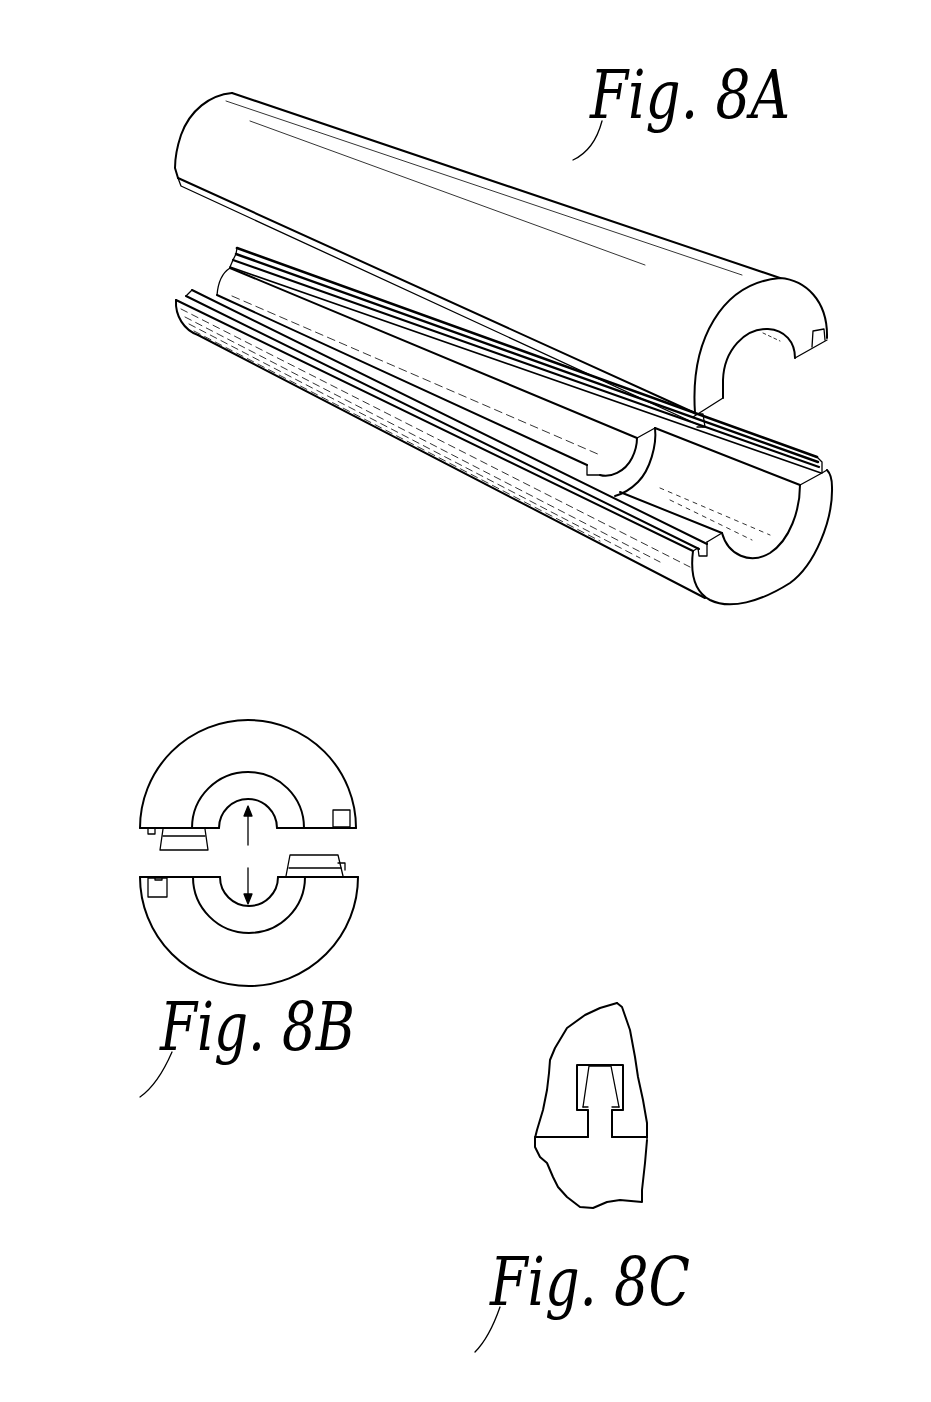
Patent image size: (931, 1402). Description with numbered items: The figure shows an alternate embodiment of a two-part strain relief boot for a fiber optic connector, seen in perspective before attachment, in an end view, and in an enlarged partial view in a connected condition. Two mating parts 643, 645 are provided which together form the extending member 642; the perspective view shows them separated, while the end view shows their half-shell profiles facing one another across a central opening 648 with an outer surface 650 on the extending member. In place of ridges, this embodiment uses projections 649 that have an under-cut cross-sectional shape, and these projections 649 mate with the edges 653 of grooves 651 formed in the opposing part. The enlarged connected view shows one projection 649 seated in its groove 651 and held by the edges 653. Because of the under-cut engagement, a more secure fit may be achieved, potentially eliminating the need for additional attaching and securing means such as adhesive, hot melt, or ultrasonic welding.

In FIG. 8A, the extending member 642 is at (518, 128).
In FIG. 8A, the mating part 643 is at (701, 239).
In FIG. 8B, the mating part 643 is at (222, 726).
In FIG. 8C, the mating part 643 is at (633, 1038).
In FIG. 8A, the mating part 645 is at (394, 435).
In FIG. 8B, the mating part 645 is at (178, 963).
In FIG. 8C, the mating part 645 is at (633, 1176).
In FIG. 8B, the central channel 648 is at (248, 855).
In FIG. 8A, the projection 649 is at (707, 420).
In FIG. 8B, the projection 649 is at (155, 845).
In FIG. 8C, the projection 649 is at (600, 1080).
In FIG. 8A, the outer surface 650 is at (425, 175).
In FIG. 8A, the groove 651 is at (822, 335).
In FIG. 8B, the groove 651 is at (352, 816).
In FIG. 8C, the groove 651 is at (576, 1081).
In FIG. 8C, the edge 653 is at (588, 1129).